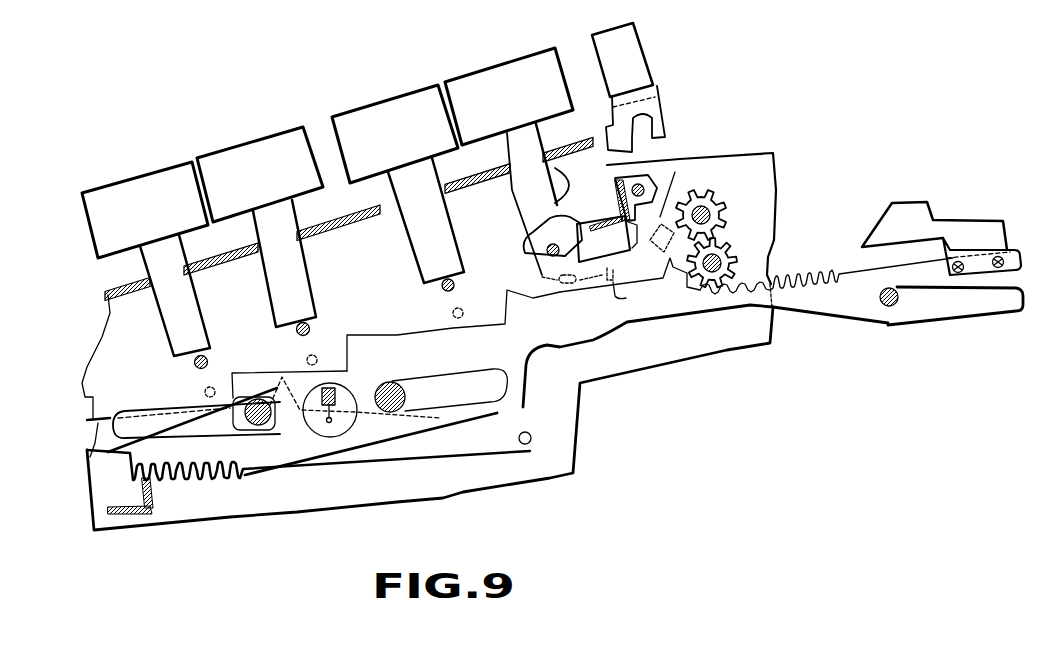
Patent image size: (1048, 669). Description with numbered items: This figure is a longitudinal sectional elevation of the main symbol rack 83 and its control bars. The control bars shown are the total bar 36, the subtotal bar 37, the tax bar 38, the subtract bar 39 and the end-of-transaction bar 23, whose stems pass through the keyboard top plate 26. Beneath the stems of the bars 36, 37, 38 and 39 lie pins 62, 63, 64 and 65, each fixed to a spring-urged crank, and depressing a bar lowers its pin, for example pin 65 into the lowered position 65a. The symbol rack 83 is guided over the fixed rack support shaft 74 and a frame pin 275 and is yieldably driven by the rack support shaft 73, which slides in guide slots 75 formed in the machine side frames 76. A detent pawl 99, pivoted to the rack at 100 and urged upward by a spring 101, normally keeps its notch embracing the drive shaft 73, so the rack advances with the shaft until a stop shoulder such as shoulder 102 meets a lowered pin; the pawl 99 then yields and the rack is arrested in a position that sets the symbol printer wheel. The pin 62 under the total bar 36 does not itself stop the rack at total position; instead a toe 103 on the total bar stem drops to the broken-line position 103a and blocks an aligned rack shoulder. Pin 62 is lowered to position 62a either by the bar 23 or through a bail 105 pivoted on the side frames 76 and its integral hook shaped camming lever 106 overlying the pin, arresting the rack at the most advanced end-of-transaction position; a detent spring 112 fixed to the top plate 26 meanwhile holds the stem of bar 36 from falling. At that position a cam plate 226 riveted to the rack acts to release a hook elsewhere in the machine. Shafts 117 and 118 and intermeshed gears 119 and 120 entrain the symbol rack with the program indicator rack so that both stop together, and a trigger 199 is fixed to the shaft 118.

The end-of-transaction bar 23 is at (630, 33).
The keyboard top plate 26 is at (447, 194).
The total bar 36 is at (492, 75).
The subtotal bar 37 is at (378, 112).
The tax bar 38 is at (243, 155).
The subtract bar 39 is at (129, 188).
The pin 62 is at (540, 257).
The lowered position of pin 62 62a is at (562, 287).
The pin 63 is at (441, 287).
The pin 64 is at (296, 330).
The pin 65 is at (190, 363).
The lowered position of pin 65 65a is at (204, 392).
The rack support shaft 73 is at (245, 413).
The rack support shaft 74 is at (885, 307).
The guide slots 75 is at (95, 436).
The machine side frames 76 is at (92, 398).
The symbol rack 83 is at (603, 333).
The detent pawl 99 is at (113, 446).
The pivot 100 is at (524, 445).
The spring 101 is at (336, 398).
The stop shoulder 102 is at (232, 373).
The toe 103 is at (638, 247).
The broken line position of toe 103 103a is at (637, 294).
The bail 105 is at (623, 200).
The hook shaped camming lever 106 is at (545, 230).
The detent spring 112 is at (578, 185).
The shaft 117 is at (730, 248).
The shaft 118 is at (718, 213).
The gear 119 is at (742, 260).
The gear 120 is at (714, 198).
The trigger 199 is at (675, 208).
The cam plate 226 is at (901, 208).
The frame pin 275 is at (396, 382).